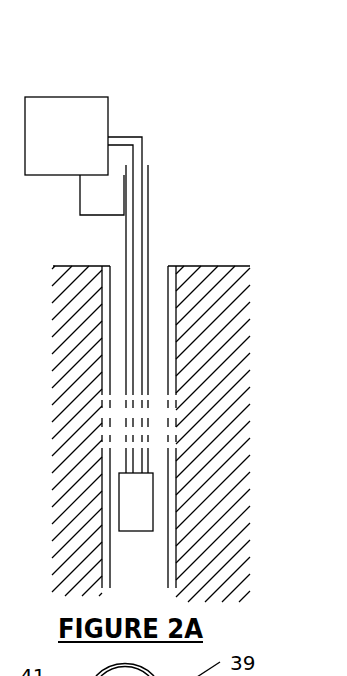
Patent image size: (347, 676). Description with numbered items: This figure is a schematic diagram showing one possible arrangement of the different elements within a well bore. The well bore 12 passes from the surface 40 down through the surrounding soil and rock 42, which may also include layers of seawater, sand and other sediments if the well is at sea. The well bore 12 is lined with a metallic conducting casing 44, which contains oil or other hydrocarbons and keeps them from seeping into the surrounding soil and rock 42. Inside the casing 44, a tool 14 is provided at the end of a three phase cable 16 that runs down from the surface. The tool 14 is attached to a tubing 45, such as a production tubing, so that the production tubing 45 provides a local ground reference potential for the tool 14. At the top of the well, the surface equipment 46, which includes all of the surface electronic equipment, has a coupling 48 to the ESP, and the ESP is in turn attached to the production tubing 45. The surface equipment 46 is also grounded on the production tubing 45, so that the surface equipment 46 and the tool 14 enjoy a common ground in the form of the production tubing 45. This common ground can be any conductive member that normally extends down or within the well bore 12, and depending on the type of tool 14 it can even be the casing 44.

The well bore 12 is at (120, 303).
The tool 14 is at (148, 520).
The three phase cable 16 is at (143, 157).
The surface 40 is at (207, 260).
The surrounding soil and rock 42 is at (50, 323).
The casing 44 is at (102, 265).
The production tubing 45 is at (125, 253).
The surface equipment 46 is at (87, 112).
The coupling 48 is at (78, 203).